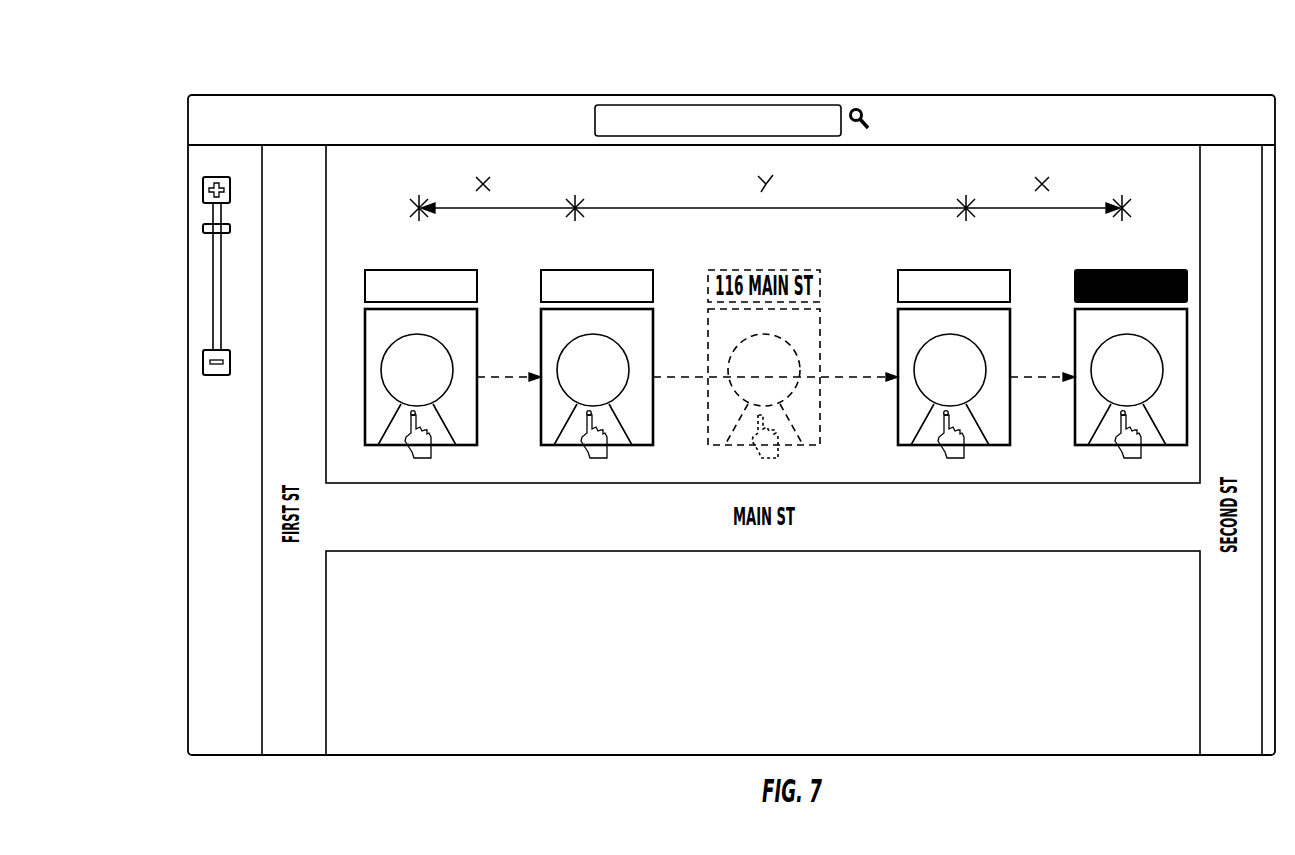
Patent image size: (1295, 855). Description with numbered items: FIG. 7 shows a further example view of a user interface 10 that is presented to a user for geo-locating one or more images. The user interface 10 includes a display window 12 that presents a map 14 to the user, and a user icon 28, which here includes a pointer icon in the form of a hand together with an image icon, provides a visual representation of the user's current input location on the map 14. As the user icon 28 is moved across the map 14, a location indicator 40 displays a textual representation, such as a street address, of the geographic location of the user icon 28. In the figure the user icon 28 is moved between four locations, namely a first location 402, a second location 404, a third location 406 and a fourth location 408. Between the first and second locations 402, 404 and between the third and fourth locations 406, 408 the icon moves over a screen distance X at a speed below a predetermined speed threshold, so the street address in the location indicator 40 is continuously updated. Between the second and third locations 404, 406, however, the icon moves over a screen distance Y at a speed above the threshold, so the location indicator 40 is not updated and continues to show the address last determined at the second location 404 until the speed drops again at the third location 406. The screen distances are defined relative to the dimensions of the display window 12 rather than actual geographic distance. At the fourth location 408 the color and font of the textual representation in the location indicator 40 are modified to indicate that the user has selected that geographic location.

The user interface 10 is at (1222, 69).
The display window 12 is at (1116, 95).
The map 14 is at (376, 730).
The user icon 28 is at (484, 345).
The location indicator 40 is at (477, 287).
The first location 402 is at (404, 429).
The second location 404 is at (578, 429).
The third location 406 is at (936, 429).
The fourth location 408 is at (1113, 429).